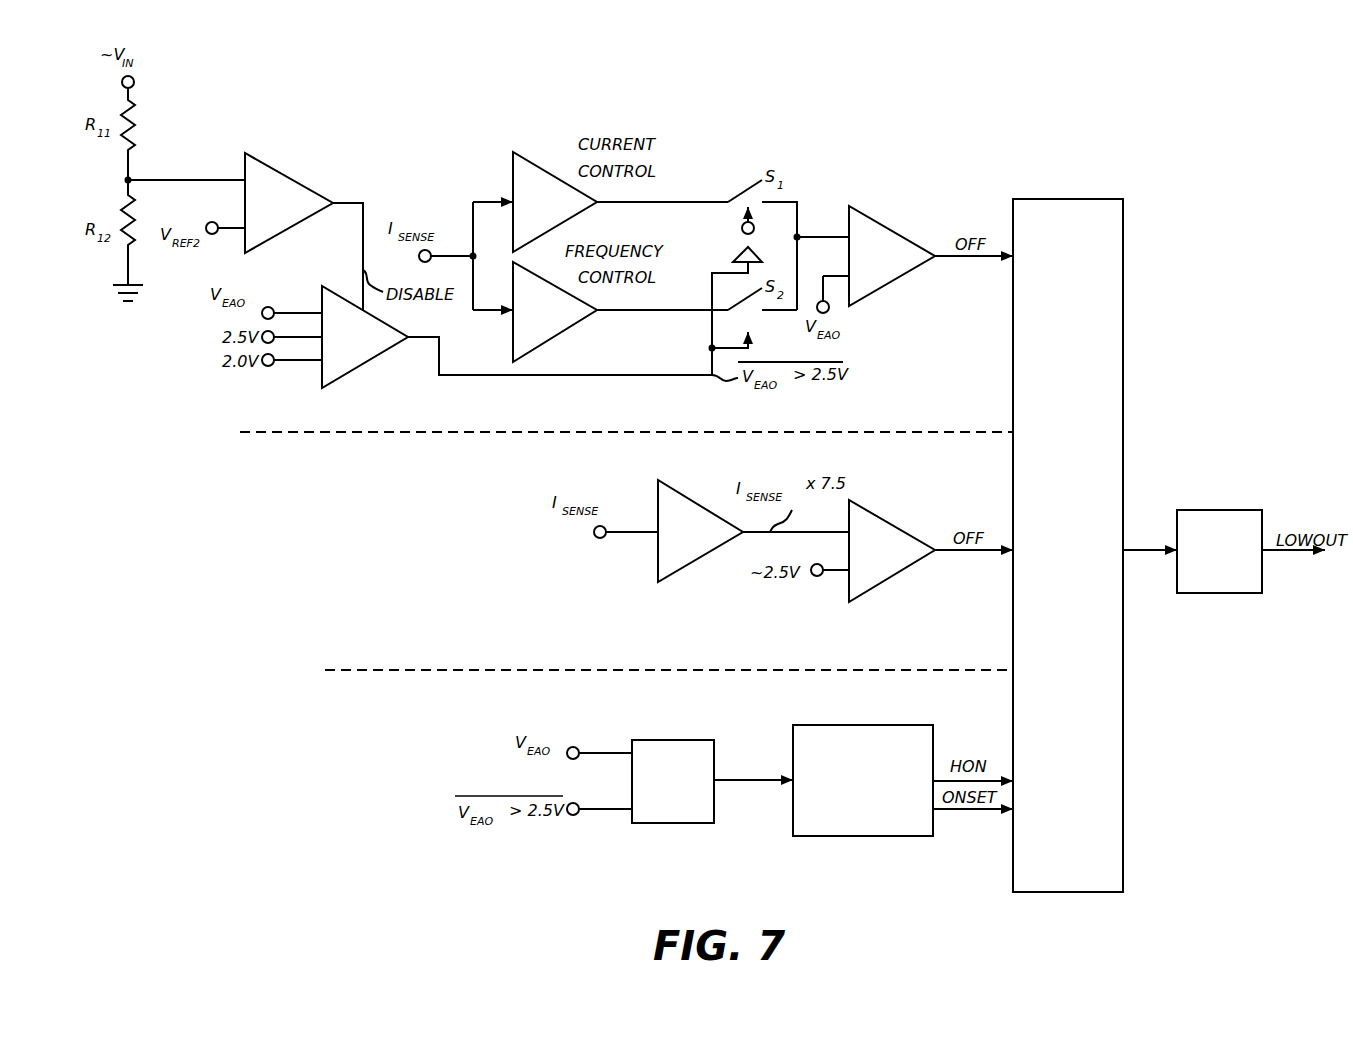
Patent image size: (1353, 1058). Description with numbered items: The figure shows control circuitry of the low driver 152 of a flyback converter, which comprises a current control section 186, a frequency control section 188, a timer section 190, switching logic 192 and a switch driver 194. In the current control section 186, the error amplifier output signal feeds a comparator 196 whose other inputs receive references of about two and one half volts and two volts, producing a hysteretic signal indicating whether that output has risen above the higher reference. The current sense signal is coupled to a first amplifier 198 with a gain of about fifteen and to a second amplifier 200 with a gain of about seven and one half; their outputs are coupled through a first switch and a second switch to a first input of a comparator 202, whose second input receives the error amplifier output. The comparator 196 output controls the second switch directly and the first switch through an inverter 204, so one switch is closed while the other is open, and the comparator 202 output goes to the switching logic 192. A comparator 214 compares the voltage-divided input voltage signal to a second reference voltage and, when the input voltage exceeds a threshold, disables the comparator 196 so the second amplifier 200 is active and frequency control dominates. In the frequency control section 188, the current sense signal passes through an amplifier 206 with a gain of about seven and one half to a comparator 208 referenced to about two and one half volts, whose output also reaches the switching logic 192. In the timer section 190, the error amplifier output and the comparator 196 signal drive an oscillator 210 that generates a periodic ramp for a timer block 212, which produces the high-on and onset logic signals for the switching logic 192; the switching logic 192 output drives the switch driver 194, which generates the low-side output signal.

The low driver 152 is at (1208, 155).
The current control section 186 is at (382, 131).
The frequency control section 188 is at (450, 549).
The timer section 190 is at (410, 786).
The switching logic 192 is at (1083, 584).
The switch driver 194 is at (1234, 571).
The comparator 196 is at (362, 365).
The first amplifier 198 is at (553, 166).
The second amplifier 200 is at (568, 330).
The comparator 202 is at (878, 222).
The inverter 204 is at (734, 252).
The amplifier 206 is at (686, 490).
The comparator 208 is at (888, 518).
The oscillator 210 is at (667, 823).
The timer block 212 is at (858, 836).
The comparator 214 is at (275, 170).